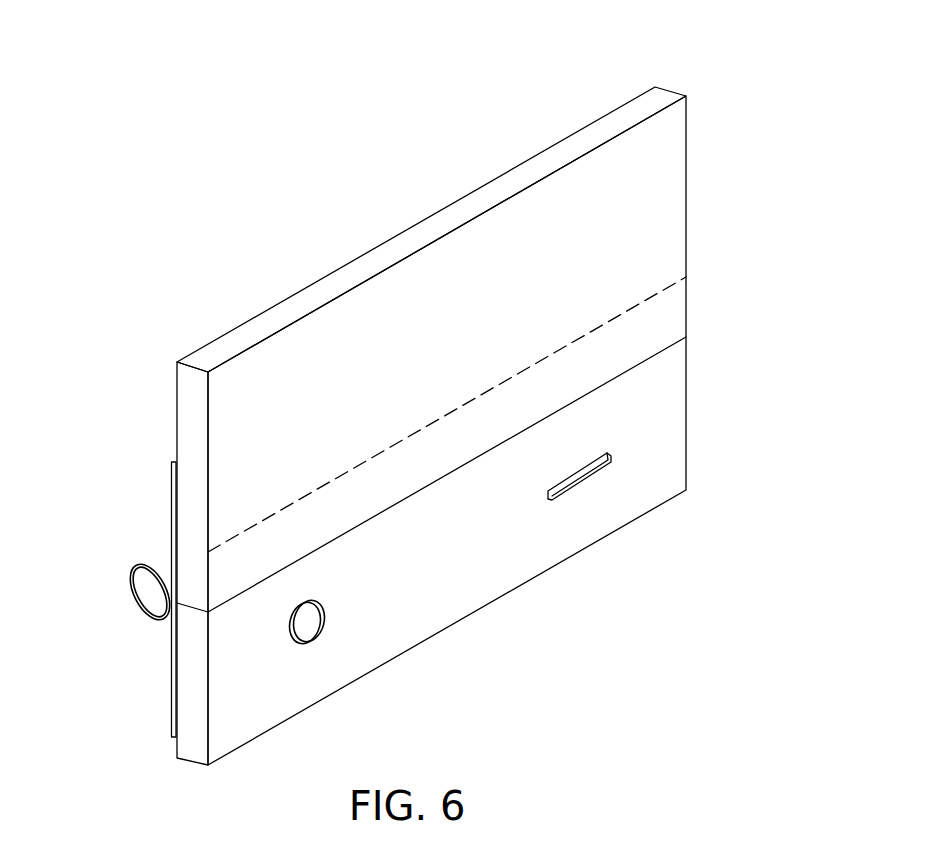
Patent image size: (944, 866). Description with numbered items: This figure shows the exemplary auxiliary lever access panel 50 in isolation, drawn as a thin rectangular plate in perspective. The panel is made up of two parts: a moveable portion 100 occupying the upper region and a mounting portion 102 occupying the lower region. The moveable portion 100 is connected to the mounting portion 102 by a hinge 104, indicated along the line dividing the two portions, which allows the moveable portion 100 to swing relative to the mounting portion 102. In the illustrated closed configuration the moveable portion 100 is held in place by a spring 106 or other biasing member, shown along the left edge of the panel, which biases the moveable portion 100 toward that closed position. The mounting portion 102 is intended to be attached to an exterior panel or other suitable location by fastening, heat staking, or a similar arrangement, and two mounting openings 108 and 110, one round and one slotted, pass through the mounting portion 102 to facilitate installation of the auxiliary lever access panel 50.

The auxiliary lever access panel 50 is at (753, 100).
The moveable portion 100 is at (665, 208).
The mounting portion 102 is at (518, 565).
The hinge 104 is at (400, 502).
The spring 106 is at (158, 692).
The mounting opening 108 is at (323, 620).
The mounting opening 110 is at (548, 492).